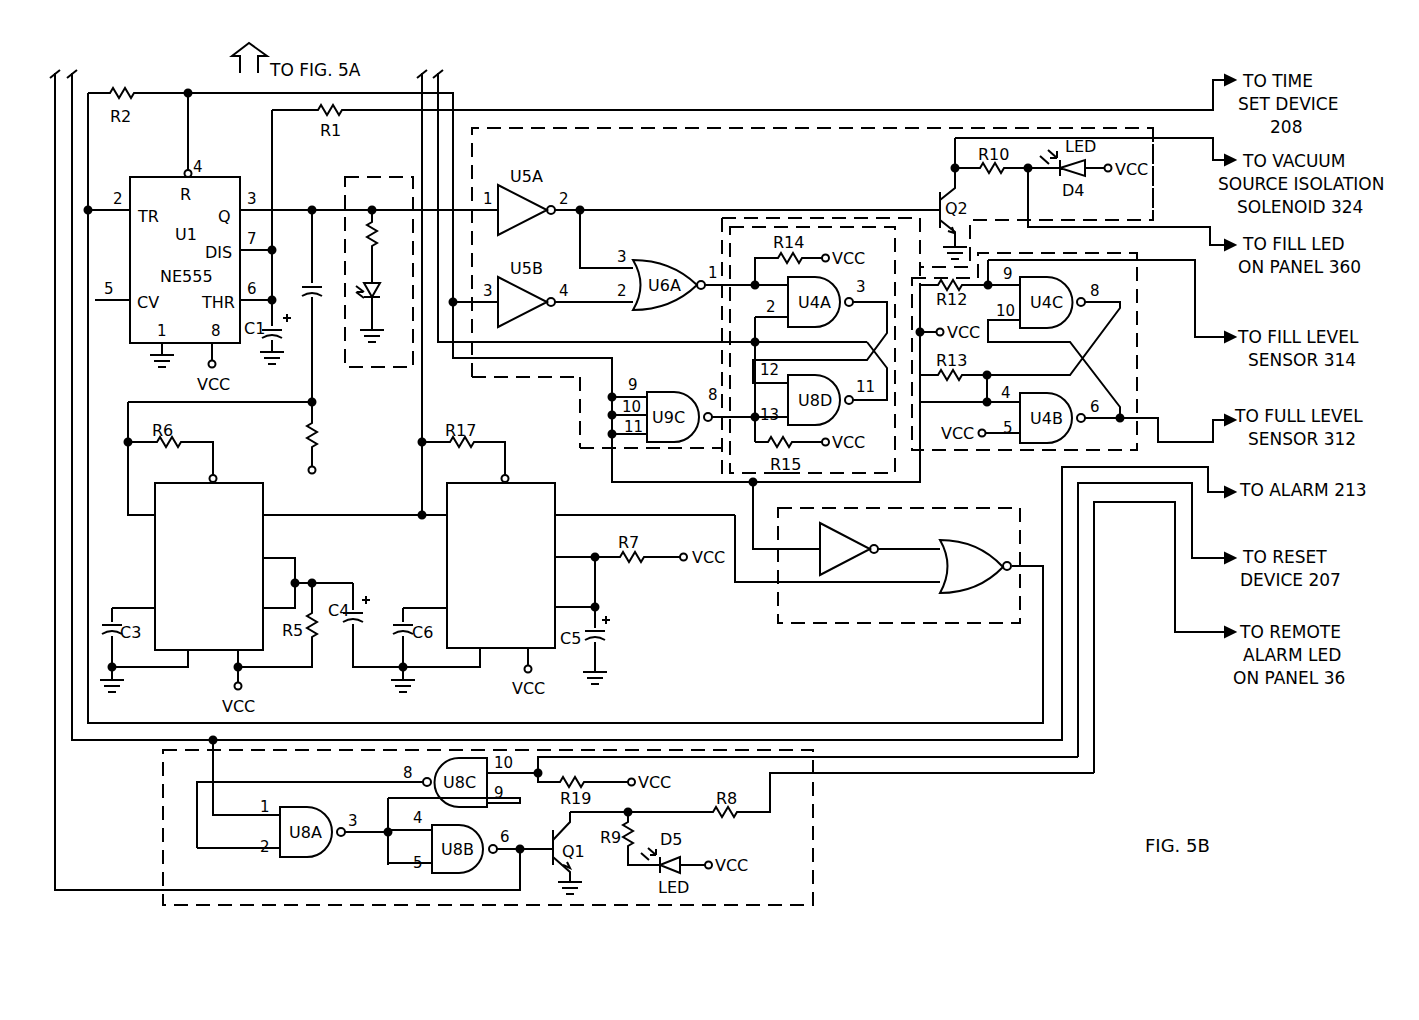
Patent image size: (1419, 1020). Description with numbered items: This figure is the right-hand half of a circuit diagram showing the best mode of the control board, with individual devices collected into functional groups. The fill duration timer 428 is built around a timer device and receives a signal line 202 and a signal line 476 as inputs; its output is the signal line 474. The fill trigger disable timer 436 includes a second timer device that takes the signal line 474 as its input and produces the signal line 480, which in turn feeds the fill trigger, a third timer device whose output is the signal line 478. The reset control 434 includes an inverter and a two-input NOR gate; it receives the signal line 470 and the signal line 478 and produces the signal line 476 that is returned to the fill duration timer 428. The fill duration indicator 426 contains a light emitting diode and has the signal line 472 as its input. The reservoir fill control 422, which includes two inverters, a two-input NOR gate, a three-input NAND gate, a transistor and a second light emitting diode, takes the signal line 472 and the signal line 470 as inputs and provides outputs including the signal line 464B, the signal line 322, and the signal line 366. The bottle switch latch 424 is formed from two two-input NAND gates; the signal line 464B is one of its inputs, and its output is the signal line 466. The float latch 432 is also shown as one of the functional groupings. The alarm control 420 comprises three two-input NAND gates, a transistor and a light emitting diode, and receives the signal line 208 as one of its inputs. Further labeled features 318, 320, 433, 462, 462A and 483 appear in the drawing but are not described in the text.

The signal line 202 is at (268, 136).
The signal line 208 is at (1113, 468).
The fill level sensor output line 318 is at (1160, 263).
The full level sensor output line 320 is at (1150, 417).
The signal line 322 is at (1173, 133).
The signal line 366 is at (1170, 227).
The alarm control 420 is at (813, 835).
The reservoir fill control 422 is at (1160, 157).
The bottle switch latch 424 is at (900, 473).
The fill duration indicator 426 is at (410, 370).
The fill duration timer 428 is at (135, 346).
The float latch 432 is at (1147, 342).
The timer U3 433 is at (450, 555).
The reset control 434 is at (838, 617).
The fill trigger disable timer 436 is at (155, 558).
The alarm bus line 462 is at (58, 823).
The NOR gate output line 462A is at (722, 285).
The signal line 464B is at (727, 410).
The signal line 466 is at (443, 88).
The signal line 470 is at (610, 470).
The signal line 472 is at (462, 222).
The signal line 474 is at (277, 405).
The signal line 476 is at (983, 720).
The signal line 478 is at (88, 262).
The signal line 480 is at (353, 513).
The trigger input line 483 is at (418, 427).